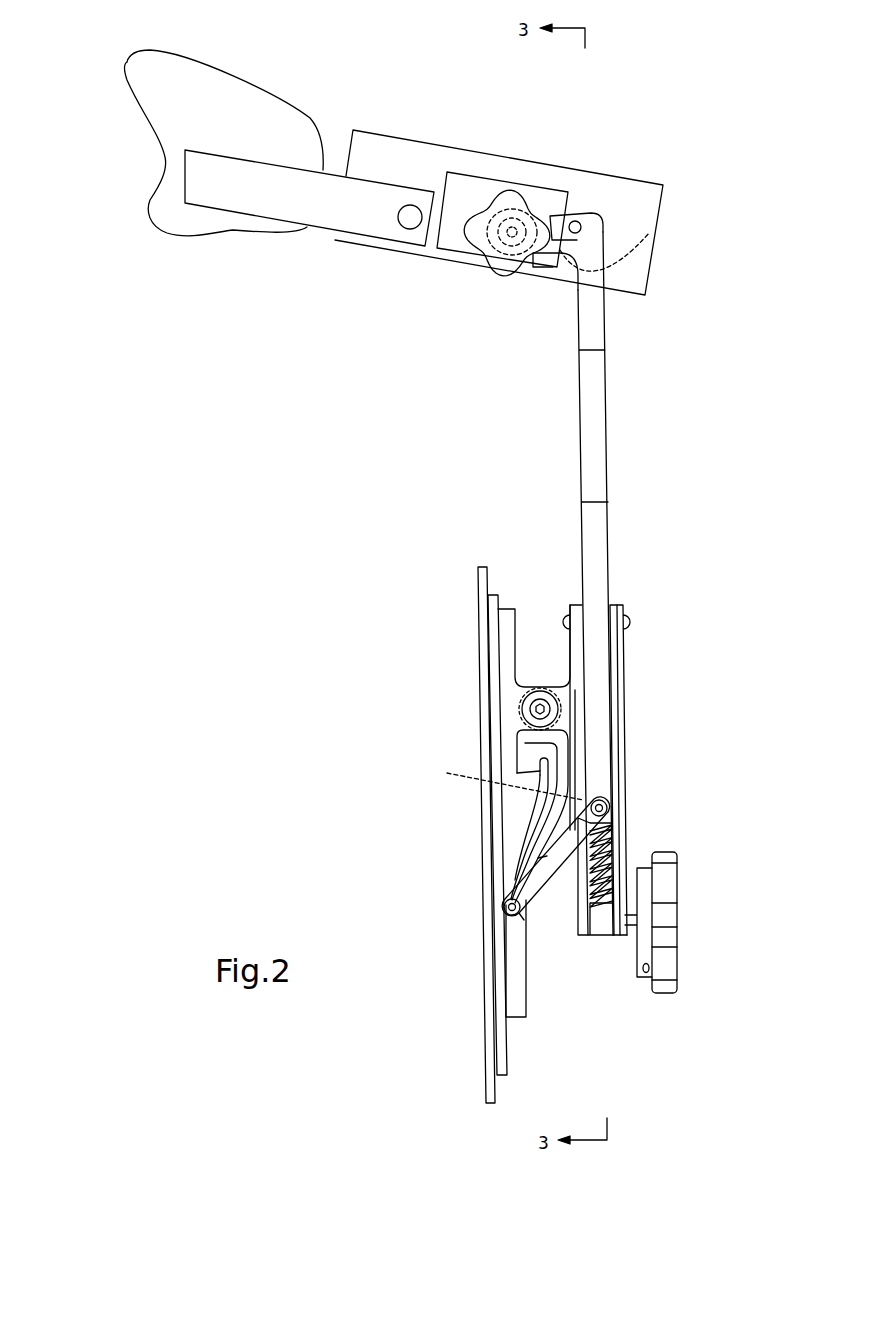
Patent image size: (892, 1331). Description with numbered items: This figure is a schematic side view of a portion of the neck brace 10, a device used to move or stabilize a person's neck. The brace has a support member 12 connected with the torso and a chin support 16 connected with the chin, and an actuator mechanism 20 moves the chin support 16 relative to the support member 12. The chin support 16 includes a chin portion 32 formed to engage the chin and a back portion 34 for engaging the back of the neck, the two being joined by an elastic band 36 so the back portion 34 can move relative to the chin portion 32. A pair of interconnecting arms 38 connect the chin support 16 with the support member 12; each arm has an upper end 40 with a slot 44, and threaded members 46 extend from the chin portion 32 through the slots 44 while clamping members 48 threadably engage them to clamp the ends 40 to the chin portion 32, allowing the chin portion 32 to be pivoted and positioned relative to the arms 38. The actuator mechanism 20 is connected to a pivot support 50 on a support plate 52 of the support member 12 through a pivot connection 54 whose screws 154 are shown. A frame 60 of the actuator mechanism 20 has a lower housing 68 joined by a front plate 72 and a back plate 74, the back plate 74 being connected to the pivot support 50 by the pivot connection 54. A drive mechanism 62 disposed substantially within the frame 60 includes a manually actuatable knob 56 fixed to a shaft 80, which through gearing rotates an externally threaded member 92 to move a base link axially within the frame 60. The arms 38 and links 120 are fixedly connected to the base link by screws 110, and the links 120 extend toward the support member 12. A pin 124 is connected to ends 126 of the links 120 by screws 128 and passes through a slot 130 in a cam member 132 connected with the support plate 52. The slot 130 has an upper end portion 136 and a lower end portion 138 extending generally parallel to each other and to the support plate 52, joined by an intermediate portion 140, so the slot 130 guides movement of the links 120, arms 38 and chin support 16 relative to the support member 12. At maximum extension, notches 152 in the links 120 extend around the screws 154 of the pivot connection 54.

The neck brace 10 is at (308, 348).
The support member 12 is at (492, 1078).
The chin support 16 is at (637, 232).
The actuator mechanism 20 is at (736, 609).
The chin portion 32 is at (638, 202).
The back portion 34 is at (190, 110).
The elastic band 36 is at (250, 192).
The interconnecting arms 38 is at (592, 441).
The upper end 40 is at (588, 262).
The slot 44 is at (578, 222).
The threaded member 46 is at (490, 270).
The clamping member 48 is at (476, 224).
The pivot support 50 is at (507, 609).
The support plate 52 is at (505, 1072).
The pivot connection 54 is at (527, 702).
The knob 56 is at (665, 885).
The frame 60 is at (624, 633).
The drive mechanism 62 is at (662, 813).
The lower housing 68 is at (606, 925).
The front plate 72 is at (620, 678).
The back plate 74 is at (569, 922).
The shaft 80 is at (632, 925).
The externally threaded member 92 is at (575, 900).
The screws 110 is at (487, 781).
The links 120 is at (560, 852).
The pin 124 is at (505, 910).
The ends 126 is at (525, 918).
The screws 128 is at (522, 893).
The slot 130 is at (540, 764).
The cam member 132 is at (512, 997).
The upper end portion 136 is at (545, 738).
The lower end portion 138 is at (540, 862).
The intermediate portion 140 is at (556, 803).
The notches 152 is at (590, 809).
The screws 154 is at (534, 712).